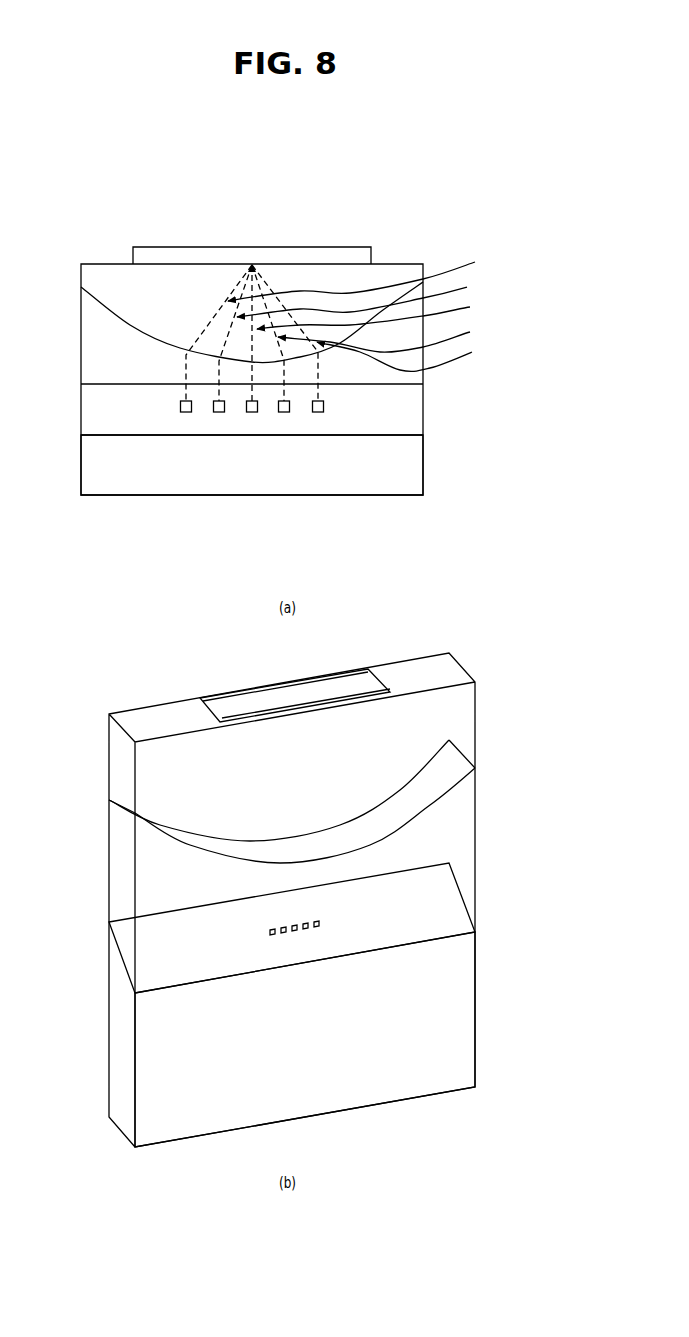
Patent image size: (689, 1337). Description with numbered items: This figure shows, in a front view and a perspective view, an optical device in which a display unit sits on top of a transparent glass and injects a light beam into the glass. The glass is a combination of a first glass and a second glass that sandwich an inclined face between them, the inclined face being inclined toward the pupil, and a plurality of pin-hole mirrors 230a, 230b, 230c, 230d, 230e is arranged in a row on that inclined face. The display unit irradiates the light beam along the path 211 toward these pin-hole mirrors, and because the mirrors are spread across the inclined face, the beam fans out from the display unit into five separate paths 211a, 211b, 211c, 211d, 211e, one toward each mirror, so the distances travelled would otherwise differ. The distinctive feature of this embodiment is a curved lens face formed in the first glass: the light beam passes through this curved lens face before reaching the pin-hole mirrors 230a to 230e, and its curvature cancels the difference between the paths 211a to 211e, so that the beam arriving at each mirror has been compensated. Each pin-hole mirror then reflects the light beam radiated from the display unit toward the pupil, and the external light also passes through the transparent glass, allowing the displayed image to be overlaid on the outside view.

The path of the light beam 211 is at (393, 312).
The first light beam path 211a is at (369, 277).
The second light beam path 211b is at (374, 297).
The third light beam path 211c is at (384, 313).
The fourth light beam path 211d is at (394, 336).
The fifth light beam path 211e is at (414, 356).
The first pin-hole mirror 230a is at (186, 420).
The second pin-hole mirror 230b is at (219, 420).
The third pin-hole mirror 230c is at (251, 420).
The fourth pin-hole mirror 230d is at (284, 420).
The fifth pin-hole mirror 230e is at (338, 474).